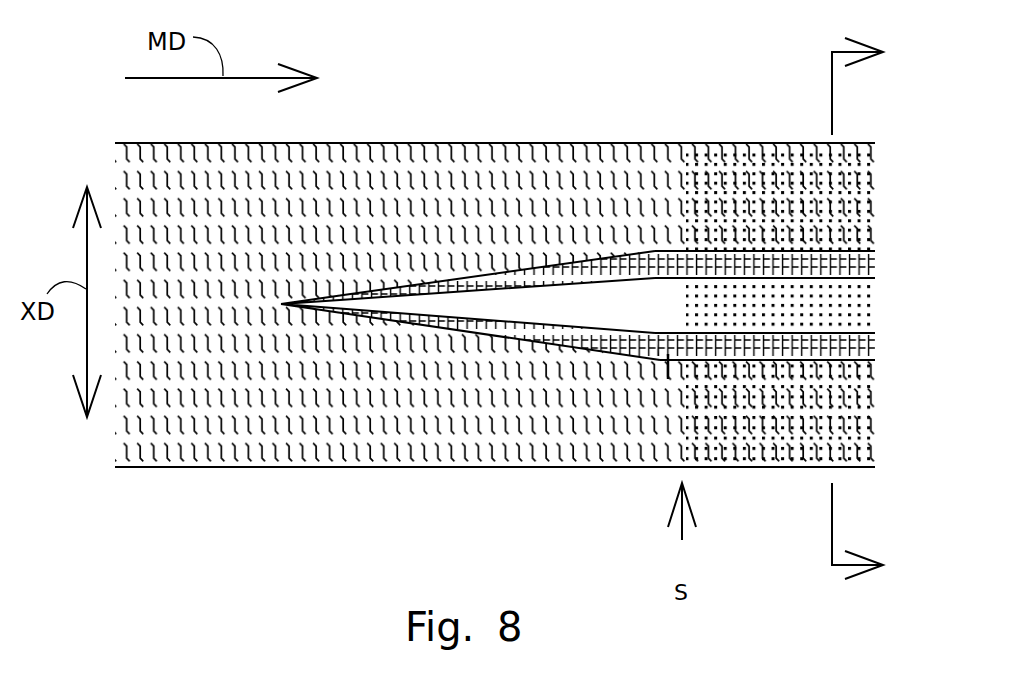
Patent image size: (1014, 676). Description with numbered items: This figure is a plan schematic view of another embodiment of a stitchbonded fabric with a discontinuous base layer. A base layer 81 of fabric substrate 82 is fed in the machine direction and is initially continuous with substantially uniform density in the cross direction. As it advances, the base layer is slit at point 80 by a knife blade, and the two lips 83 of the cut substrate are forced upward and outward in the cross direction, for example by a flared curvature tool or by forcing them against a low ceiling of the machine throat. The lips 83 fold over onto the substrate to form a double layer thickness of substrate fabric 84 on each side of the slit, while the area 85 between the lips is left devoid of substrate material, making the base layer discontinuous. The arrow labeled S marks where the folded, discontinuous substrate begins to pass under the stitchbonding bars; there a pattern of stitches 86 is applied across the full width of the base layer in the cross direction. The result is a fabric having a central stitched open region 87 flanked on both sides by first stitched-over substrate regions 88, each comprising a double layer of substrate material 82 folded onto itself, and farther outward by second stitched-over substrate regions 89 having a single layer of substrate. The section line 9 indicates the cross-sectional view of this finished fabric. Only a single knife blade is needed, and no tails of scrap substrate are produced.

The section line 9- 9 is at (868, 309).
The slitting point 80 is at (282, 305).
The base layer 81 is at (180, 200).
The fabric substrate 82 is at (398, 428).
The lips 83 is at (480, 272).
The double layer thickness of substrate fabric 84 is at (668, 360).
The area devoid of substrate 85 is at (545, 308).
The pattern of stitches 86 is at (645, 280).
The central stitched open region 87 is at (847, 306).
The first stitched-over substrate region 88 is at (877, 251).
The second stitched-over substrate region 89 is at (793, 172).